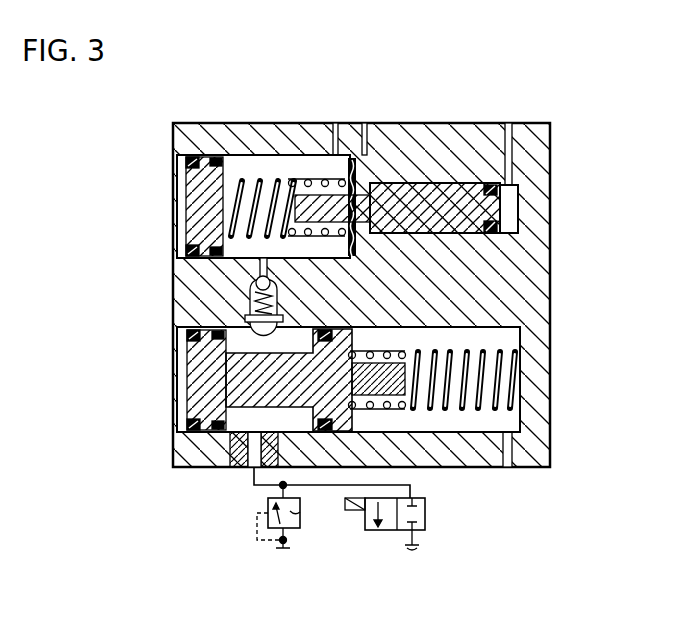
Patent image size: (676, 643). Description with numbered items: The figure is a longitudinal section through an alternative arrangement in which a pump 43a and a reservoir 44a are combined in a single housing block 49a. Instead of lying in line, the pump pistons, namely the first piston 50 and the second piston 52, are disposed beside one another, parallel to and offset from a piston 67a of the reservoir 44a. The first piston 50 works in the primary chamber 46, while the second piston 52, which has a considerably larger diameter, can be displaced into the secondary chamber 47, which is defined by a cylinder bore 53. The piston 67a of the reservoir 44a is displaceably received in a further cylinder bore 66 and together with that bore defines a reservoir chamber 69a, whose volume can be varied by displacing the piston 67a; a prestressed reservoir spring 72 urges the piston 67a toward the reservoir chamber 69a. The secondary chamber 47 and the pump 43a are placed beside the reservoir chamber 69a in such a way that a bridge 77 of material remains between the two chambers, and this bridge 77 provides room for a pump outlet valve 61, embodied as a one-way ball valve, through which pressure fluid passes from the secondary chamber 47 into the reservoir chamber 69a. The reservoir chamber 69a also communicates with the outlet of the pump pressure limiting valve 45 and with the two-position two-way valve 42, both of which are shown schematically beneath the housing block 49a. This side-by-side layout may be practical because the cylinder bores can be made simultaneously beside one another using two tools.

The 2/2-way valve 42 is at (424, 511).
The pump 43a is at (160, 213).
The reservoir 44a is at (158, 385).
The pump pressure limiting valve 45 is at (300, 515).
The primary chamber 46 is at (508, 205).
The secondary chamber 47 is at (247, 172).
The housing block 49a is at (516, 289).
The first piston 50 is at (443, 204).
The second piston 52 is at (372, 172).
The cylinder bore 53 is at (298, 160).
The pump outlet valve 61 is at (270, 285).
The cylinder bore 66 is at (488, 426).
The piston 67a is at (296, 393).
The reservoir chamber 69a is at (285, 342).
The reservoir spring 72 is at (273, 177).
The bridge 77 is at (197, 292).